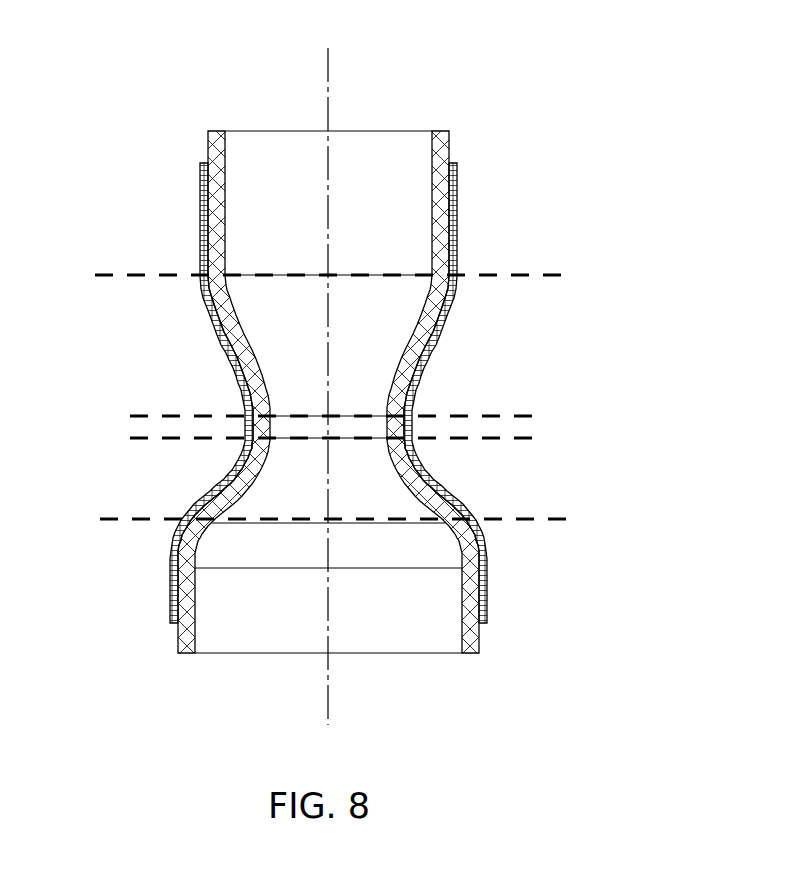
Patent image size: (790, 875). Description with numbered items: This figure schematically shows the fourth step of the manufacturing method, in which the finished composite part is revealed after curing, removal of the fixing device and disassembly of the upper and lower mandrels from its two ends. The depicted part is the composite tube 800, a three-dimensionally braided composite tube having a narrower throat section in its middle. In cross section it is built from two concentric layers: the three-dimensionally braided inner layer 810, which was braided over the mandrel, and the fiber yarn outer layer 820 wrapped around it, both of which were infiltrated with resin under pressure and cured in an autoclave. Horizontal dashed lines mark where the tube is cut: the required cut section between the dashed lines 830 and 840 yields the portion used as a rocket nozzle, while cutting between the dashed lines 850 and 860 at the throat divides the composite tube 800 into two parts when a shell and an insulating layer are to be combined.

The composite tube 800 is at (253, 130).
The 3D braided inner layer 810 is at (452, 148).
The fiber yarn outer layer 820 is at (428, 350).
The dashed line 830 is at (361, 275).
The dashed line 840 is at (363, 520).
The dashed line 850 is at (367, 417).
The dashed line 860 is at (367, 440).